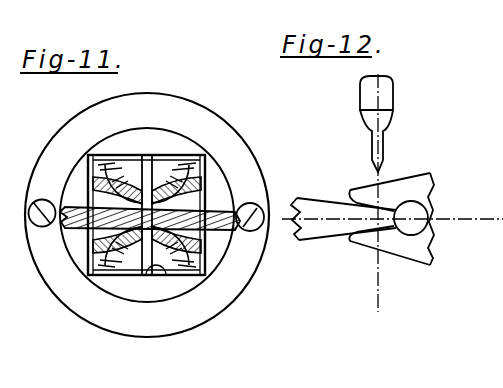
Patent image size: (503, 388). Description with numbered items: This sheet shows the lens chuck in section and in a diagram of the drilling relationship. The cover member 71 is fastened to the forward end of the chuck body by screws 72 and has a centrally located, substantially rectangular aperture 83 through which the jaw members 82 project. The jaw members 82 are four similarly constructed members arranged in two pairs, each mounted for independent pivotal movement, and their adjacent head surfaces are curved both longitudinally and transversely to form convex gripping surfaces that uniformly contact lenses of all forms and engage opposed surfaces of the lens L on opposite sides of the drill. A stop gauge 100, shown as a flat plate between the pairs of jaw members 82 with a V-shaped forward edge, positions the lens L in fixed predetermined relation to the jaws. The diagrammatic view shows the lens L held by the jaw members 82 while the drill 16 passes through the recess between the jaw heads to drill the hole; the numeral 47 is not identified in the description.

In FIG. 11, the cover member 71 is at (102, 140).
In FIG. 11, the screws 72 is at (33, 202).
In FIG. 11, the jaw members 82 is at (72, 167).
In FIG. 12, the jaw members 82 is at (431, 231).
In FIG. 11, the bearing cup 47 is at (222, 158).
In FIG. 11, the stop gauge 100 is at (150, 176).
In FIG. 12, the stop gauge 100 is at (406, 233).
In FIG. 11, the aperture 83 is at (163, 272).
In FIG. 11, the link L is at (60, 248).
In FIG. 12, the link L is at (315, 234).
In FIG. 12, the drill 16 is at (389, 105).